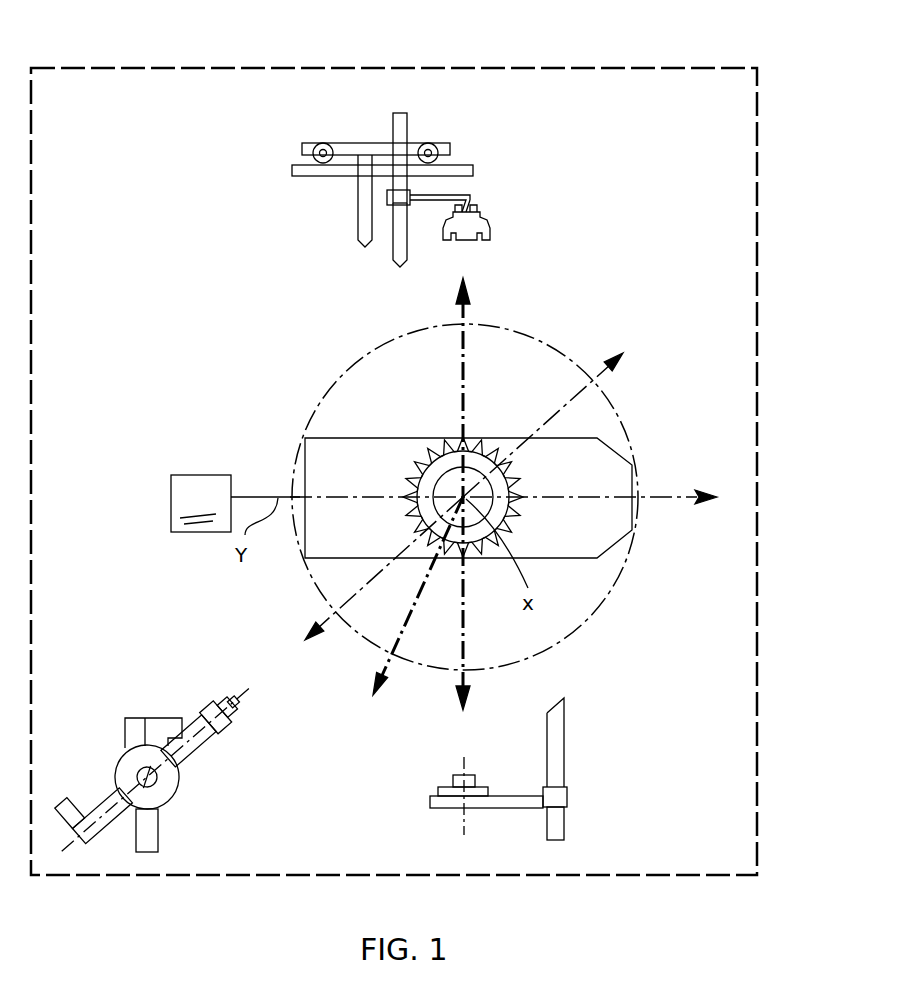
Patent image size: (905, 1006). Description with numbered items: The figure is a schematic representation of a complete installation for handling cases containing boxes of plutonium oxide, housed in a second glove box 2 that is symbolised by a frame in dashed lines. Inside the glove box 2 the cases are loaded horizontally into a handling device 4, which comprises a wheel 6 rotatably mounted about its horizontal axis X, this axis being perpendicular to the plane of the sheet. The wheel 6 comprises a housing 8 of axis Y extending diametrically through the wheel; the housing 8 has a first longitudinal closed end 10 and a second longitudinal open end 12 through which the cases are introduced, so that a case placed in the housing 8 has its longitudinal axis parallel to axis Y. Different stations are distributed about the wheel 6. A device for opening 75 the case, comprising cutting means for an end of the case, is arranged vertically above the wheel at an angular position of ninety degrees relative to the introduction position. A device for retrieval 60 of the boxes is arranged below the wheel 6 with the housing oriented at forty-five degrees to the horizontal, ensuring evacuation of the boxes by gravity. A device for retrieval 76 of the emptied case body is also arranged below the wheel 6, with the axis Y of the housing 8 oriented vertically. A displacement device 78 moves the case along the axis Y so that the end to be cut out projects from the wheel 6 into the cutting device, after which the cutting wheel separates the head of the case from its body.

The glove box 2 is at (757, 130).
The handling device 4 is at (680, 468).
The wheel 6 is at (503, 323).
The housing 8 is at (592, 468).
The first longitudinal closed end 10 is at (352, 447).
The second longitudinal open end 12 is at (620, 537).
The device for retrieval of boxes 60 is at (95, 735).
The device for opening the case 75 is at (492, 148).
The device for retrieval of the case body 76 is at (594, 801).
The displacement device 78 is at (235, 503).